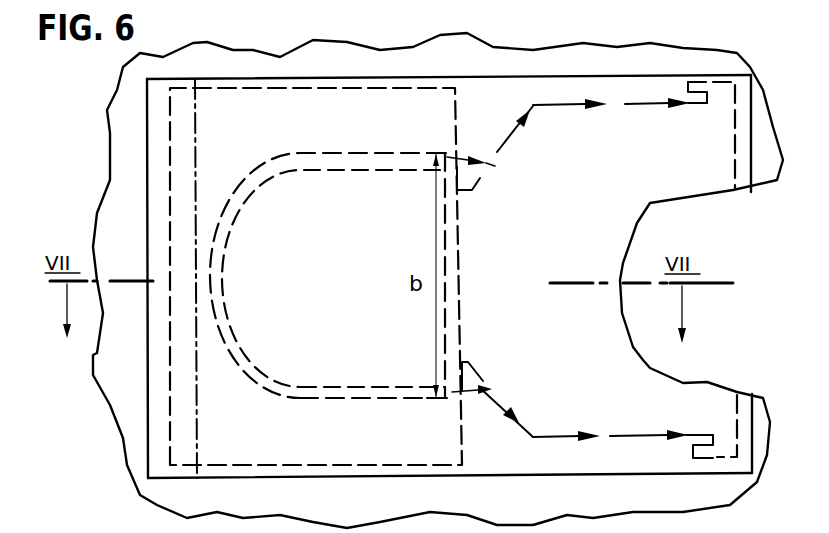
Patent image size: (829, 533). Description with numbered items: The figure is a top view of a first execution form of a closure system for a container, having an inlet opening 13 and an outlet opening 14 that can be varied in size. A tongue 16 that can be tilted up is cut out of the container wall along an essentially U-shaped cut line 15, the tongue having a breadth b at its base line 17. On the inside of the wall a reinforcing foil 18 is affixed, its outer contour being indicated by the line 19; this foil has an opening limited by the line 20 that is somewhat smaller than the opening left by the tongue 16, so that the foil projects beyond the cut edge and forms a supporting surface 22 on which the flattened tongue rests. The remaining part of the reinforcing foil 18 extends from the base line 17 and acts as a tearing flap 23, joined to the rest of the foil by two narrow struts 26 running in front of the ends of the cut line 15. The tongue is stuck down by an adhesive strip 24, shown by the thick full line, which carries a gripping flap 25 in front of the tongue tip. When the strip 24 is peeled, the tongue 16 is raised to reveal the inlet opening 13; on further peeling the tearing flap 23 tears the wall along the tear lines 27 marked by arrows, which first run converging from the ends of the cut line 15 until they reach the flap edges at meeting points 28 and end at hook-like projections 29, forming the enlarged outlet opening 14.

The inlet opening 13 is at (318, 217).
The outlet opening 14 is at (613, 177).
The cut line 15 is at (228, 208).
The tongue 16 is at (263, 293).
The base line 17 is at (469, 275).
The reinforcing foil 18 is at (443, 445).
The outer contour line 19 is at (303, 88).
The opening limit line 20 is at (320, 390).
The supporting surface 22 is at (368, 395).
The tearing flap 23 is at (653, 140).
The adhesive strip 24 is at (360, 78).
The gripping flap 25 is at (165, 408).
The struts 26 is at (480, 284).
The tear lines 27 is at (523, 117).
The meeting points 28 is at (496, 275).
The hook-like projections 29 is at (697, 82).